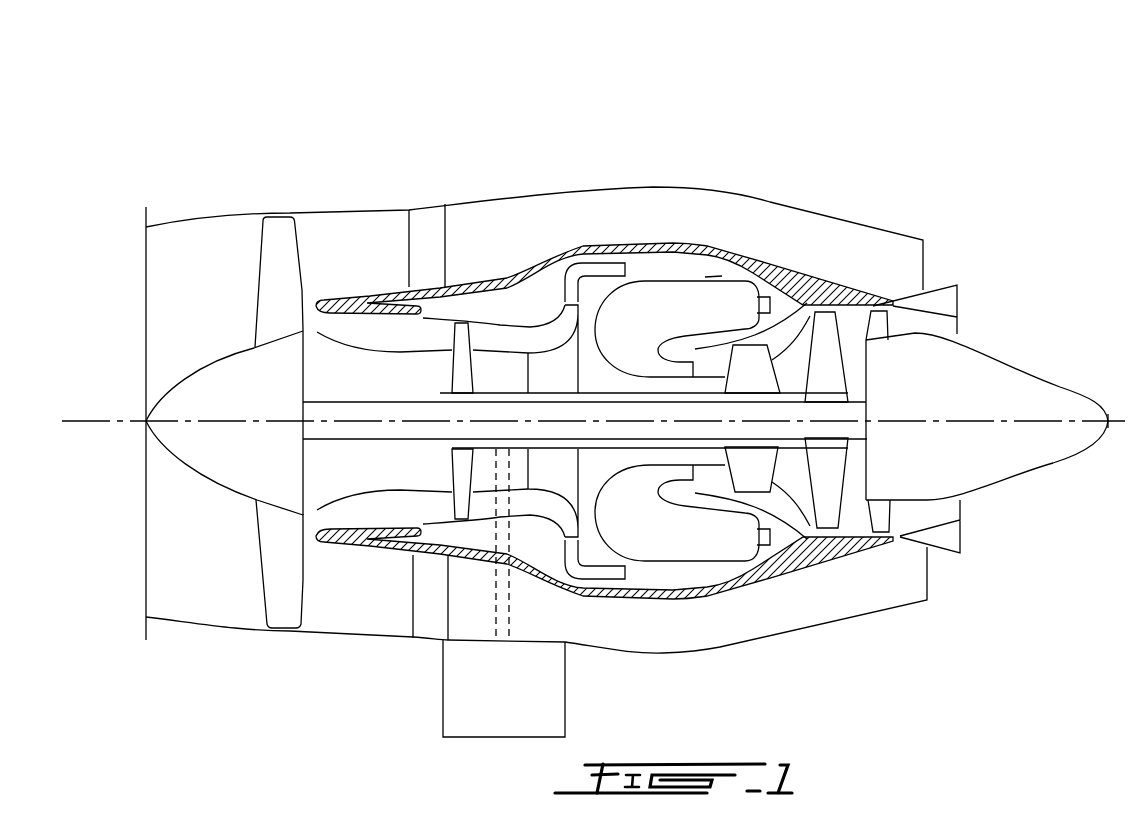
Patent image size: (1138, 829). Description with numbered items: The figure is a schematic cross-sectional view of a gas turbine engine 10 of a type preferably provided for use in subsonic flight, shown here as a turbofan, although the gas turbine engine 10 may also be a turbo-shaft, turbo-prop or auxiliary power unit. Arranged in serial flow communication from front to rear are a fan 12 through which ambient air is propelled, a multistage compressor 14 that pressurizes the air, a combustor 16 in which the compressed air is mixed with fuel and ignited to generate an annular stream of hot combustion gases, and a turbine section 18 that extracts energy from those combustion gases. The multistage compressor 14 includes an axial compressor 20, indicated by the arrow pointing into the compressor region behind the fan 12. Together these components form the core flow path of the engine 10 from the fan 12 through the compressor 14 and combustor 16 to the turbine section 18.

The gas turbine engine 10 is at (808, 145).
The fan 12 is at (277, 553).
The multistage compressor 14 is at (513, 343).
The combustor 16 is at (677, 297).
The turbine section 18 is at (792, 477).
The axial compressor 20 is at (457, 295).